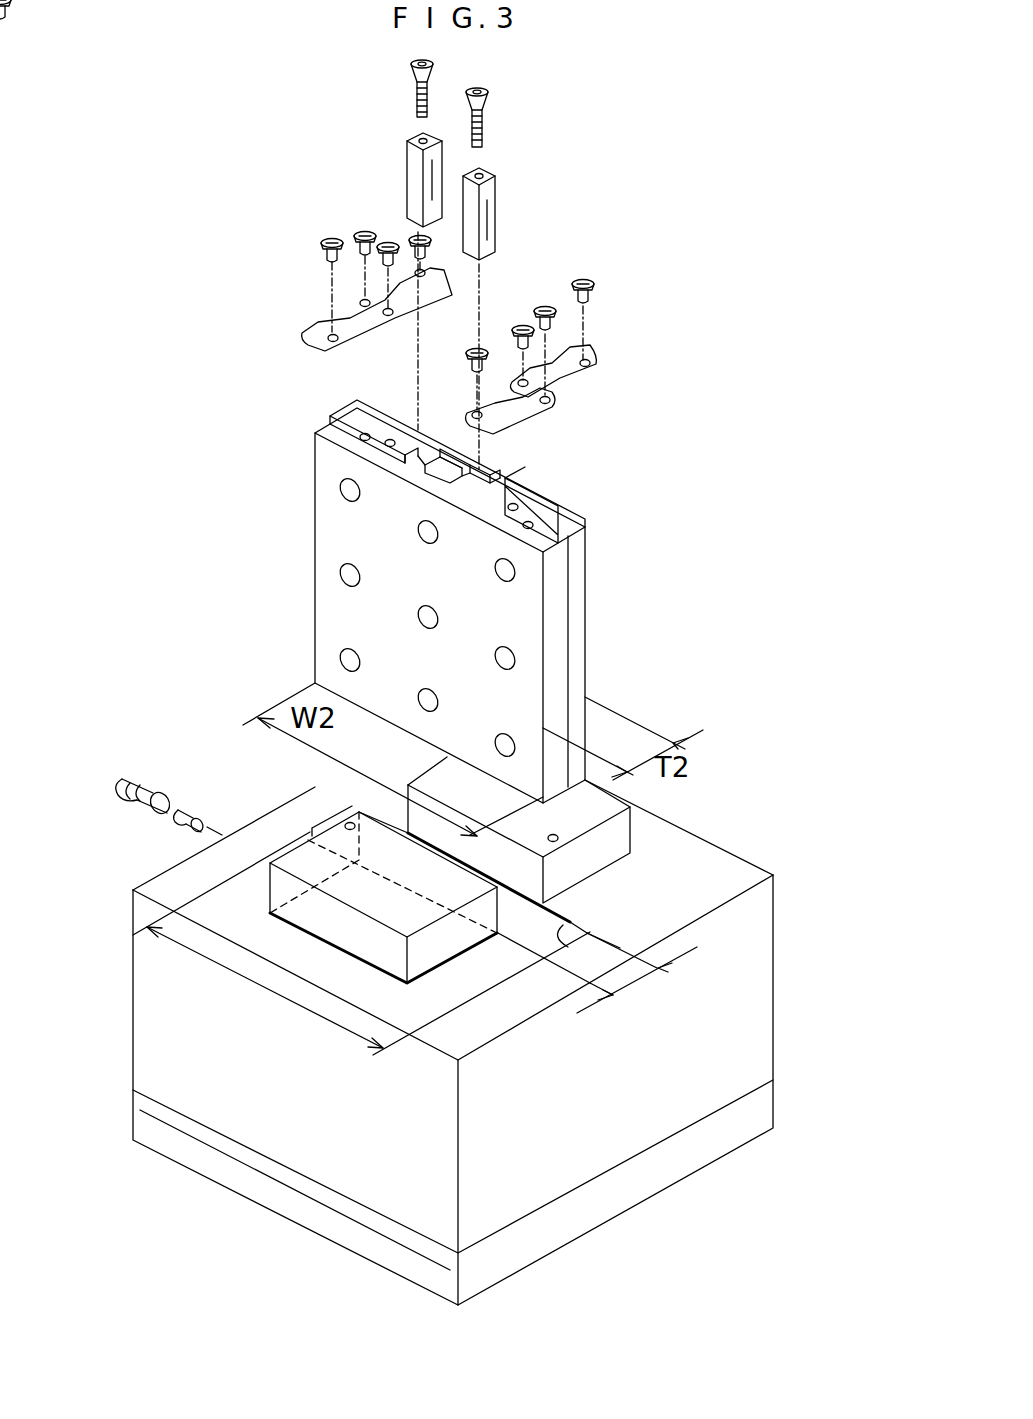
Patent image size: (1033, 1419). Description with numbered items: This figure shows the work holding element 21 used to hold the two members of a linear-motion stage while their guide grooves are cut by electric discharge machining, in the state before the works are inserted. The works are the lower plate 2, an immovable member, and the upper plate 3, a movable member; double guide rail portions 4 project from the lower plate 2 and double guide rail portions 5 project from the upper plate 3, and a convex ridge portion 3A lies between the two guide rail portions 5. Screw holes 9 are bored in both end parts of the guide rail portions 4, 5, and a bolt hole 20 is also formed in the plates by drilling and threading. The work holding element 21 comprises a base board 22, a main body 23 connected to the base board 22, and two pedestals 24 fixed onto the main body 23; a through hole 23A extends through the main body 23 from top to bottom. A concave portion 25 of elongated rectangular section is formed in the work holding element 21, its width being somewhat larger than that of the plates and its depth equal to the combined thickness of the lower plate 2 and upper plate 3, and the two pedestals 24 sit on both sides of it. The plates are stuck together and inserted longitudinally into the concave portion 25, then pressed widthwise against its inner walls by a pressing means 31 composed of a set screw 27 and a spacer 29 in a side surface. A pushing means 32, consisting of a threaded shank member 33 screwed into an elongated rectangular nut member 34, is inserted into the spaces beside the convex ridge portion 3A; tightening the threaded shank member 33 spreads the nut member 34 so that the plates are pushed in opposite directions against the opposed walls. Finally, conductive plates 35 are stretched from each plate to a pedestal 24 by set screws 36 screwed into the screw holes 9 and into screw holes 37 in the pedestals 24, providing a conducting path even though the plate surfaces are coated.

The lower plate 2 is at (552, 513).
The upper plate 3 is at (330, 540).
The convex ridge portion 3A is at (443, 483).
The guide rail portions 4 is at (410, 445).
The guide rail portions 5 is at (340, 420).
The screw holes 9 is at (390, 440).
The bolt hole 20 is at (428, 617).
The work holding element 21 is at (143, 1010).
The base board 22 is at (232, 1168).
The main body 23 is at (195, 1100).
The through hole 23A is at (567, 923).
The pedestals 24 is at (297, 833).
The concave portion 25 is at (593, 913).
The set screw 27 is at (125, 797).
The spacer 29 is at (180, 820).
The pressing means 31 is at (143, 770).
The pushing means 32 is at (408, 150).
The threaded shank member 33 is at (415, 98).
The nut member 34 is at (406, 192).
The conductive plates 35 is at (318, 328).
The set screws 36 is at (360, 232).
The screw holes 37 is at (335, 815).